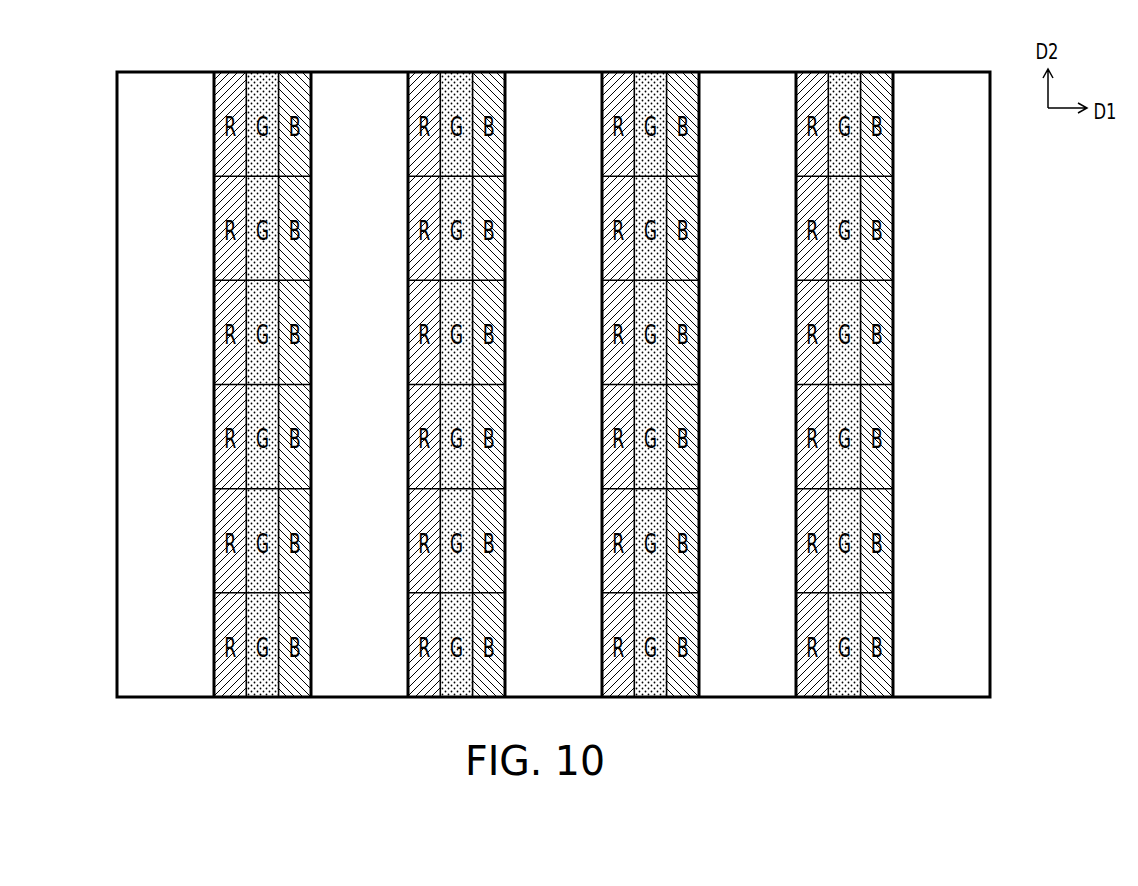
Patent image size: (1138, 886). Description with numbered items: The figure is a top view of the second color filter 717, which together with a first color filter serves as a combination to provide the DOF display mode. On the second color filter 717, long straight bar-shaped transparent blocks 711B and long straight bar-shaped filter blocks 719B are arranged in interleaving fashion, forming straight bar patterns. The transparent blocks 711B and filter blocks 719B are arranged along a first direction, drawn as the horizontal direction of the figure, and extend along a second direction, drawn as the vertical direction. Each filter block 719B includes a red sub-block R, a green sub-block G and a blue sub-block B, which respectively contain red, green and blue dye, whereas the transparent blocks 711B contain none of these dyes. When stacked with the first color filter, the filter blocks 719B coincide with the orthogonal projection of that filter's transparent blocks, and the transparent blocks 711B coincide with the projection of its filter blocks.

The second color filter 717 is at (1065, 742).
The transparent blocks 711B is at (748, 70).
The filter blocks 719B is at (651, 70).